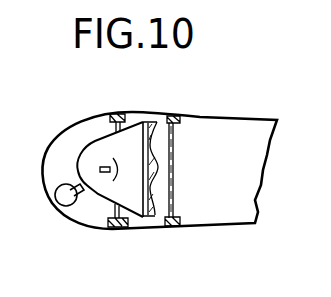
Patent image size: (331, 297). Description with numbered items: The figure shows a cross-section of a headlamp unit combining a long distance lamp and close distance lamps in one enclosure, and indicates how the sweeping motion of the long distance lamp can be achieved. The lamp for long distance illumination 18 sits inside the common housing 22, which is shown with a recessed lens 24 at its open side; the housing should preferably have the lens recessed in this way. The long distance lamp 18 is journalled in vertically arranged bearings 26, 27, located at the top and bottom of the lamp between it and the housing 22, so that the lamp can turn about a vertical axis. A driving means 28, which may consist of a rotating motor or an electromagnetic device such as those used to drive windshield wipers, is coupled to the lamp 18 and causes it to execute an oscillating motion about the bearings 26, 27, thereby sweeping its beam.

The lamp for long distance illumination 18 is at (88, 150).
The common housing 22 is at (138, 111).
The recessed lens 24 is at (176, 137).
The vertically arranged bearing 26 is at (115, 113).
The vertically arranged bearing 27 is at (117, 228).
The driving means 28 is at (65, 212).